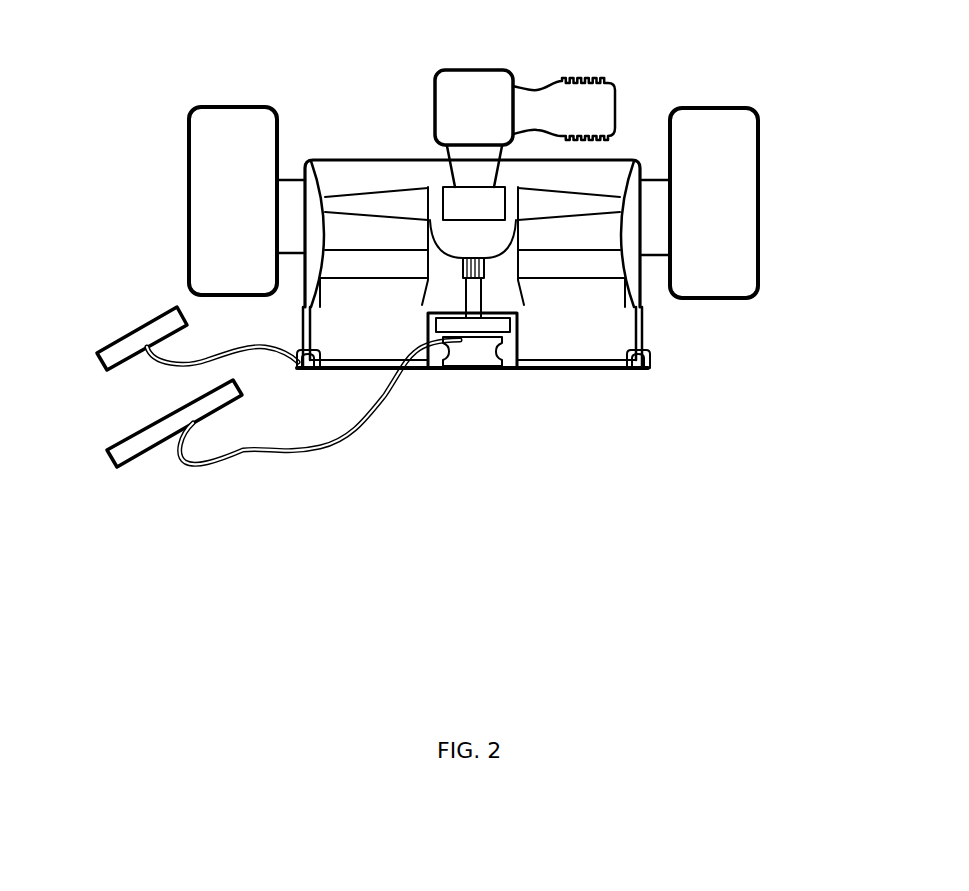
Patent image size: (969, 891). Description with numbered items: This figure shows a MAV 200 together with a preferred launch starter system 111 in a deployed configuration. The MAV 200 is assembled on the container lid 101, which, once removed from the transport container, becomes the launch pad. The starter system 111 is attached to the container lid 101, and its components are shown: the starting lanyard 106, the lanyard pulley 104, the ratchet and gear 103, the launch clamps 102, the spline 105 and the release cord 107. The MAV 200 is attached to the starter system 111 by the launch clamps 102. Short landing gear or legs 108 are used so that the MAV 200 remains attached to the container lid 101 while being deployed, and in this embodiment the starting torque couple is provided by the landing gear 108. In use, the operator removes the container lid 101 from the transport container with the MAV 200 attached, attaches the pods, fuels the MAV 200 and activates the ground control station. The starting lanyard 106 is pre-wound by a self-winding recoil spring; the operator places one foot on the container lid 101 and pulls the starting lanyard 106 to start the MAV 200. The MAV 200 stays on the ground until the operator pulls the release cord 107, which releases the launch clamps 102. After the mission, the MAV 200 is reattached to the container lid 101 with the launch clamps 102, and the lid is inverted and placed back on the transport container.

The container lid 101 is at (582, 370).
The launch clamps 102 is at (653, 367).
The ratchet and gear 103 is at (472, 320).
The lanyard pulley 104 is at (478, 350).
The spline 105 is at (468, 265).
The starting lanyard 106 is at (323, 445).
The release cord 107 is at (183, 366).
The landing gear 108 is at (645, 322).
The launch starter system 111 is at (240, 453).
The MAV 200 is at (518, 206).